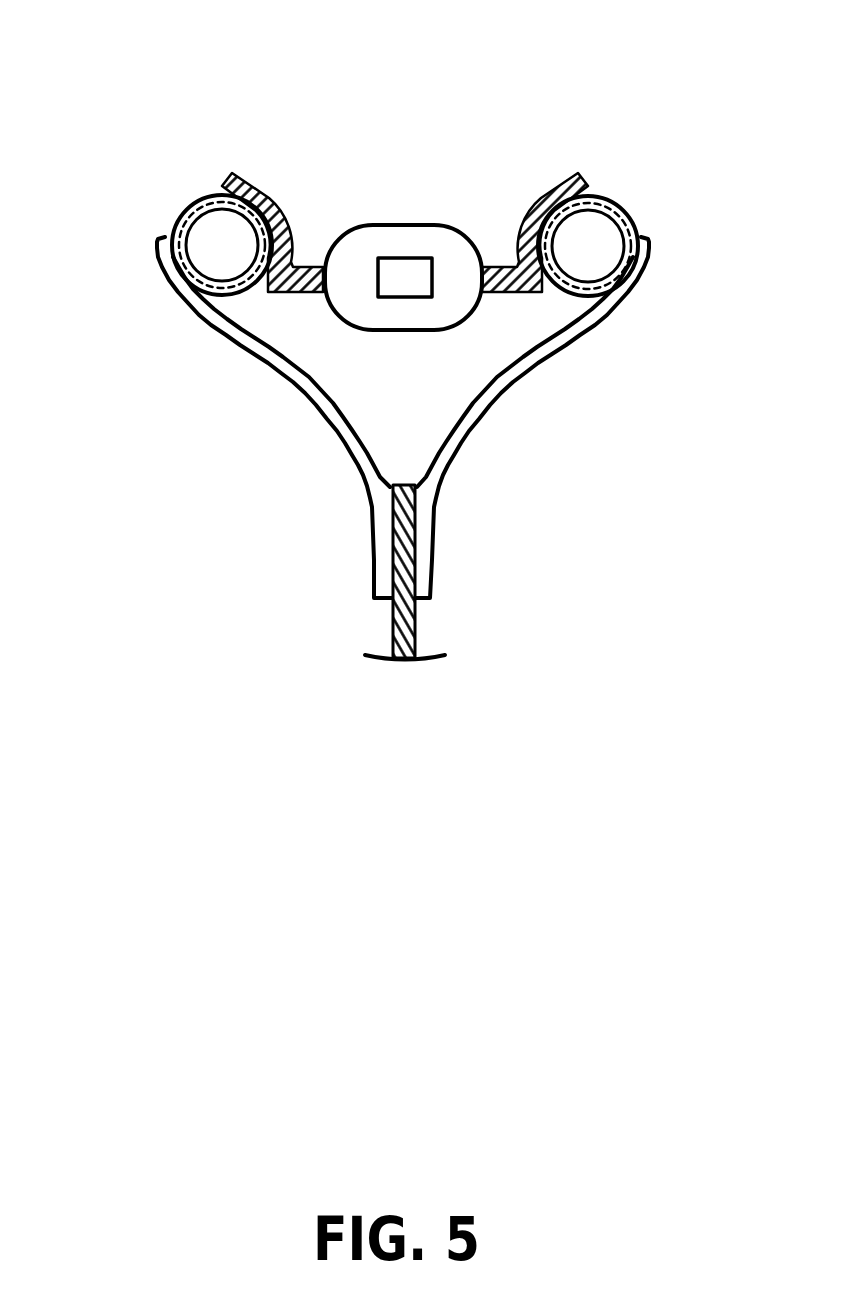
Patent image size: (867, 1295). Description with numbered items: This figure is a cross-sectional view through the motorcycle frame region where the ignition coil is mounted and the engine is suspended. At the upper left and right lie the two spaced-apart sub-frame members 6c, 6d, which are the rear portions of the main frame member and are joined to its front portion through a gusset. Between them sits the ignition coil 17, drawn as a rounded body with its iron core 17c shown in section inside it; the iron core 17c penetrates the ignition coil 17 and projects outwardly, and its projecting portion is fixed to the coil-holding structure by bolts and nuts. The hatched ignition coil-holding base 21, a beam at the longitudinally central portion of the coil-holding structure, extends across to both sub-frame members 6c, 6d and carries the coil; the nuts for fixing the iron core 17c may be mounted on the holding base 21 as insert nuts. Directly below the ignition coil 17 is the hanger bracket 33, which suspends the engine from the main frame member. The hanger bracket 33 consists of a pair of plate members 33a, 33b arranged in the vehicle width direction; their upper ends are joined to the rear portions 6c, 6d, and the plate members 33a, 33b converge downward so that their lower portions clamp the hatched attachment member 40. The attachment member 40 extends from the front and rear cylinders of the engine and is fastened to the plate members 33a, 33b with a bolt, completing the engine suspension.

The sub-frame member 6c is at (615, 205).
The sub-frame member 6d is at (193, 205).
The ignition coil 17 is at (438, 243).
The iron core 17c is at (395, 262).
The ignition coil-holding base 21 is at (497, 265).
The hanger bracket 33 is at (403, 559).
The plate member 33a is at (490, 407).
The plate member 33b is at (323, 417).
The attachment member 40 is at (392, 632).